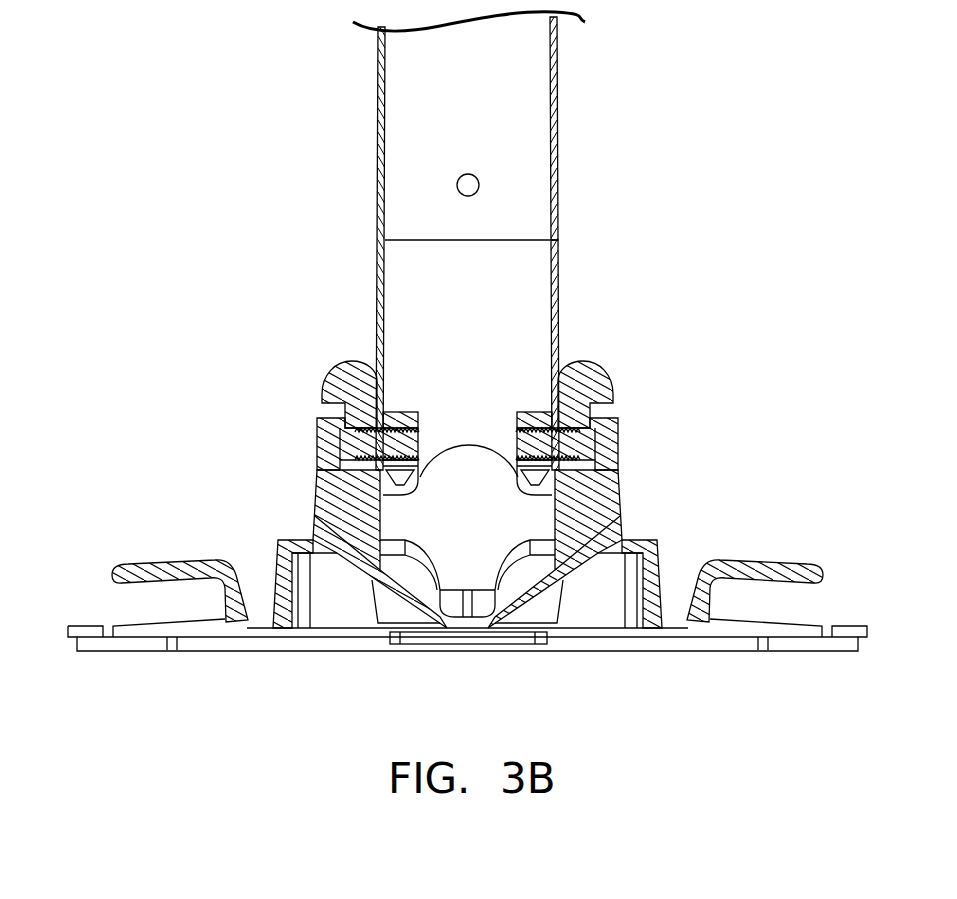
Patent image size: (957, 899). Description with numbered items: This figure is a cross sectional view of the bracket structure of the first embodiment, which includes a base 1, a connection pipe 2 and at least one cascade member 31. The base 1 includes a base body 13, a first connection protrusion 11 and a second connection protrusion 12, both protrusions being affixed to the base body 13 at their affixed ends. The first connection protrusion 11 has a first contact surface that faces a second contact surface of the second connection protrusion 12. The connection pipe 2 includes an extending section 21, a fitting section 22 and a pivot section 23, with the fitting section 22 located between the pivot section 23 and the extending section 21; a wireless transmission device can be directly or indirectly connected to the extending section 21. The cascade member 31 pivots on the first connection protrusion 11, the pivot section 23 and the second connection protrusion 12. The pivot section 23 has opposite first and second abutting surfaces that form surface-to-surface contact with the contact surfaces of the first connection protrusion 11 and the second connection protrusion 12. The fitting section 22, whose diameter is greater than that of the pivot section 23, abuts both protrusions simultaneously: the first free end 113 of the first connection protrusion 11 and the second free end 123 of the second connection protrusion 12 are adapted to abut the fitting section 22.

The base 1 is at (459, 631).
The connection pipe 2 is at (464, 241).
The extending section 21 is at (557, 112).
The fitting section 22 is at (556, 322).
The pivot section 23 is at (610, 522).
The first connection protrusion 11 is at (346, 480).
The first free end 113 is at (341, 374).
The second connection protrusion 12 is at (630, 379).
The second free end 123 is at (600, 374).
The base body 13 is at (128, 622).
The cascade member 31 is at (330, 447).